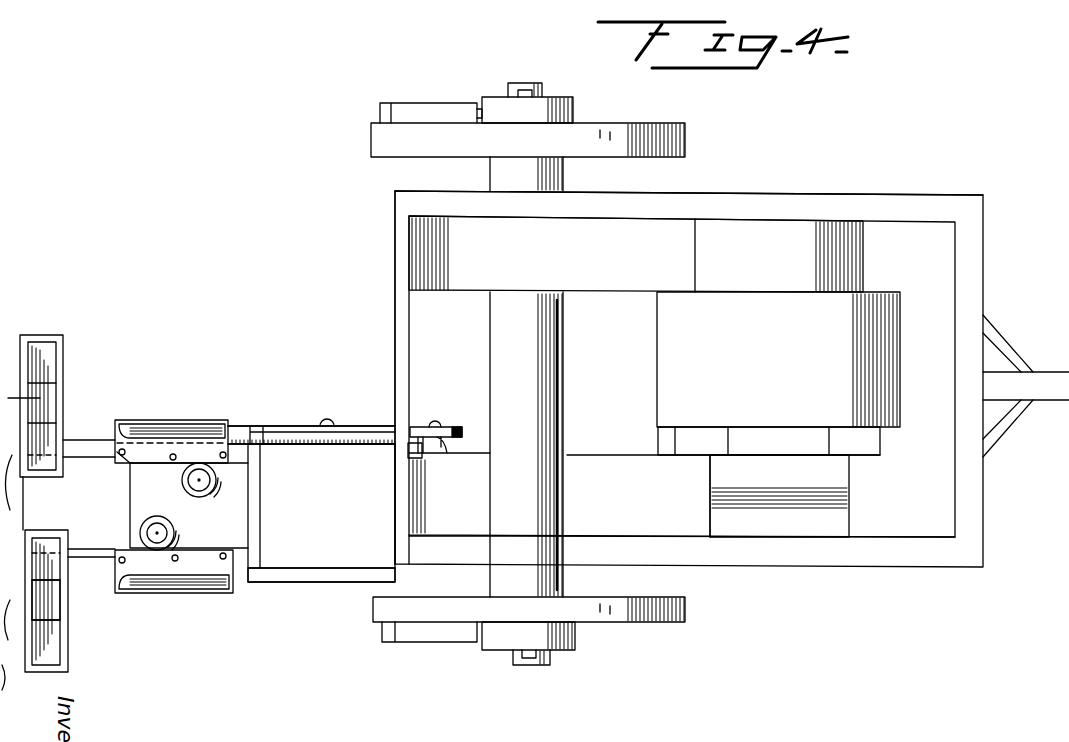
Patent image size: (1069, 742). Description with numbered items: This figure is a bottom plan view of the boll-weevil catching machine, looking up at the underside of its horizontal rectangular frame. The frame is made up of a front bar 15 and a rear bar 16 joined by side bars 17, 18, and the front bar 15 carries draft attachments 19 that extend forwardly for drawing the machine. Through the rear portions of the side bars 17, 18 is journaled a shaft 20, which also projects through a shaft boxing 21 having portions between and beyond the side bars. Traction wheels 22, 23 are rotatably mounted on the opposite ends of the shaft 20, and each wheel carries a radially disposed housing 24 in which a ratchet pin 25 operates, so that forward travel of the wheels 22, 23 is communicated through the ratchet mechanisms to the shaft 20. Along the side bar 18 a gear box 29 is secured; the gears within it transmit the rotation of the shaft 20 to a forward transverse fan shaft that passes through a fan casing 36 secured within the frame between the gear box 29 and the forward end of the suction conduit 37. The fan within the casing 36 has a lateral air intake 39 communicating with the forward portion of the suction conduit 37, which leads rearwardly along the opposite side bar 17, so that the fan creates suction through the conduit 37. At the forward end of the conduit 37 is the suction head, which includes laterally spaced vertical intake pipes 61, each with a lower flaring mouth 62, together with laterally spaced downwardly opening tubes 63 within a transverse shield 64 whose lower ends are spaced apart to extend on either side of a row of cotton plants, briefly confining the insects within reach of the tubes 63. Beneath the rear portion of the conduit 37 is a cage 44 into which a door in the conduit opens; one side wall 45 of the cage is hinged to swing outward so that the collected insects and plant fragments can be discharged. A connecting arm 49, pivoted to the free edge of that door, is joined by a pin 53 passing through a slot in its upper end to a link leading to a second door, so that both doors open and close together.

The front bar 15 is at (966, 288).
The rear bar 16 is at (396, 353).
The side bar 17 is at (811, 556).
The side bar 18 is at (802, 198).
The draft attachments 19 is at (1013, 410).
The shaft 20 is at (545, 94).
The shaft boxing 21 is at (543, 418).
The wheel 22 is at (686, 614).
The wheel 23 is at (686, 143).
The housing 24 is at (457, 92).
The ratchet pin 25 is at (478, 642).
The gear box 29 is at (636, 254).
The fan casing 36 is at (778, 359).
The suction conduit 37 is at (237, 450).
The lateral air intake 39 is at (817, 443).
The cage 44 is at (321, 513).
The side wall 45 is at (338, 575).
The connecting arm 49 is at (282, 427).
The pin 53 is at (438, 477).
The vertical intake pipe 61 is at (45, 605).
The flaring mouth 62 is at (48, 355).
The downwardly opening tube 63 is at (203, 512).
The transverse shield 64 is at (200, 585).